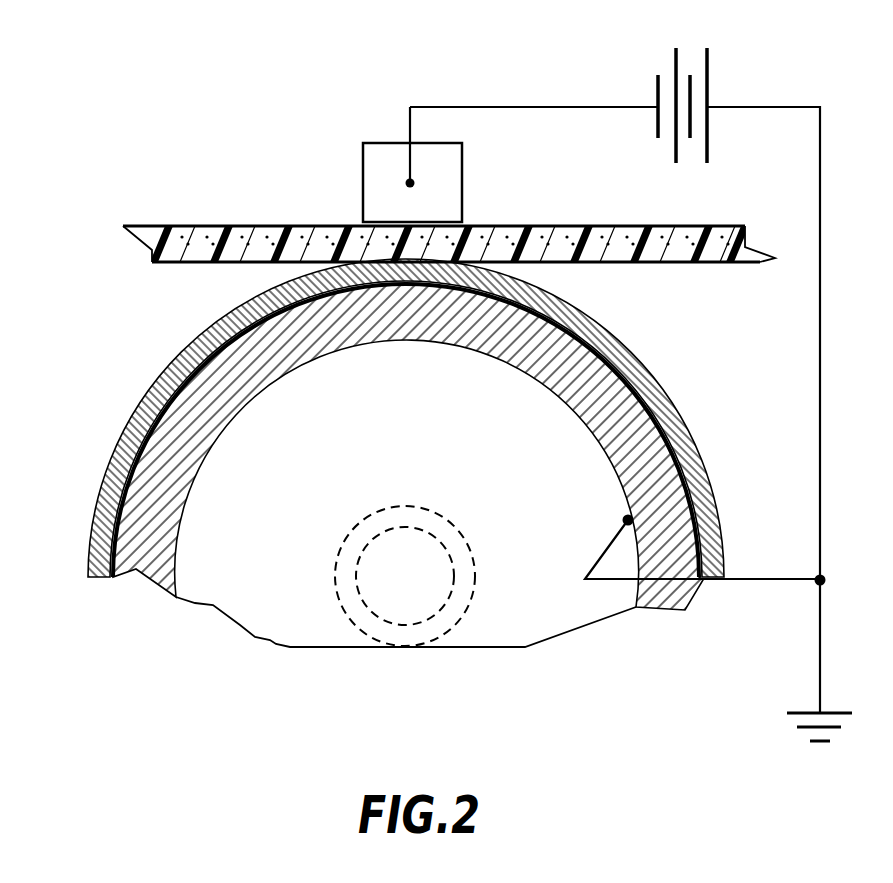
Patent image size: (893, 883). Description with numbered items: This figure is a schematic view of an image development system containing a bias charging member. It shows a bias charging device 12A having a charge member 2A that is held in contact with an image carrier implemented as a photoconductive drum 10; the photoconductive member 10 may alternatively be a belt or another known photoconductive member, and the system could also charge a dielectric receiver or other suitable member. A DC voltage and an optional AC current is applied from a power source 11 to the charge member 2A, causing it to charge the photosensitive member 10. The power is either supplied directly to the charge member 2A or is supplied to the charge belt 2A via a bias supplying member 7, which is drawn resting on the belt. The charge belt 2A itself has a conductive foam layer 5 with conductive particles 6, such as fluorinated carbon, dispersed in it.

The bias charging device 12A is at (292, 74).
The charge member 2A is at (406, 237).
The conductive foam layer 5 is at (151, 252).
The conductive particles 6 is at (222, 250).
The bias supplying member 7 is at (370, 158).
The photoconductive drum 10 is at (720, 379).
The power source 11 is at (818, 658).